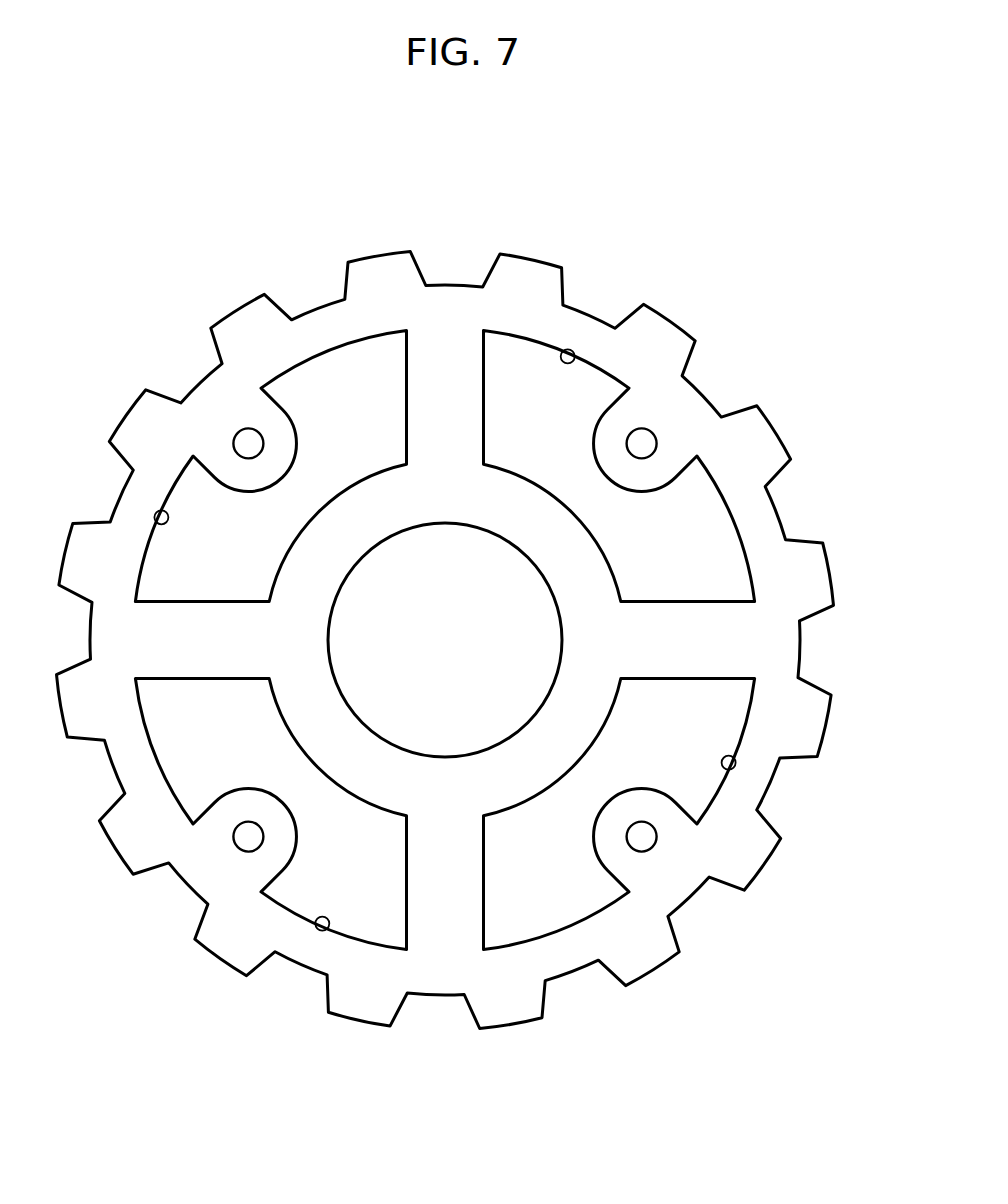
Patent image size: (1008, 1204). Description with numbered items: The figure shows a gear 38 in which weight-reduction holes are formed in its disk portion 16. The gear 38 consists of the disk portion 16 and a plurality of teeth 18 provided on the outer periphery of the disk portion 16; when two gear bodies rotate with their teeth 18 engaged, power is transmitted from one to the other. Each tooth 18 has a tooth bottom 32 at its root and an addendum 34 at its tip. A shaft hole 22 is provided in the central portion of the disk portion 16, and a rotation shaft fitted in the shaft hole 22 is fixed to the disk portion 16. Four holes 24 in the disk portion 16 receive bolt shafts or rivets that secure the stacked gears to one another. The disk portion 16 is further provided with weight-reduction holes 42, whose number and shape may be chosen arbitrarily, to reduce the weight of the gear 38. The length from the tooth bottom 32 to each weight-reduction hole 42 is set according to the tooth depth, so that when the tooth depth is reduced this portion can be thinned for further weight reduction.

The disk portion 16 is at (467, 599).
The tooth 18 is at (467, 599).
The shaft hole 22 is at (556, 632).
The hole 24 is at (245, 440).
The tooth bottom 32 is at (467, 599).
The addendum 34 is at (532, 255).
The gear 38 is at (467, 599).
The weight-reduction hole 42 is at (570, 352).